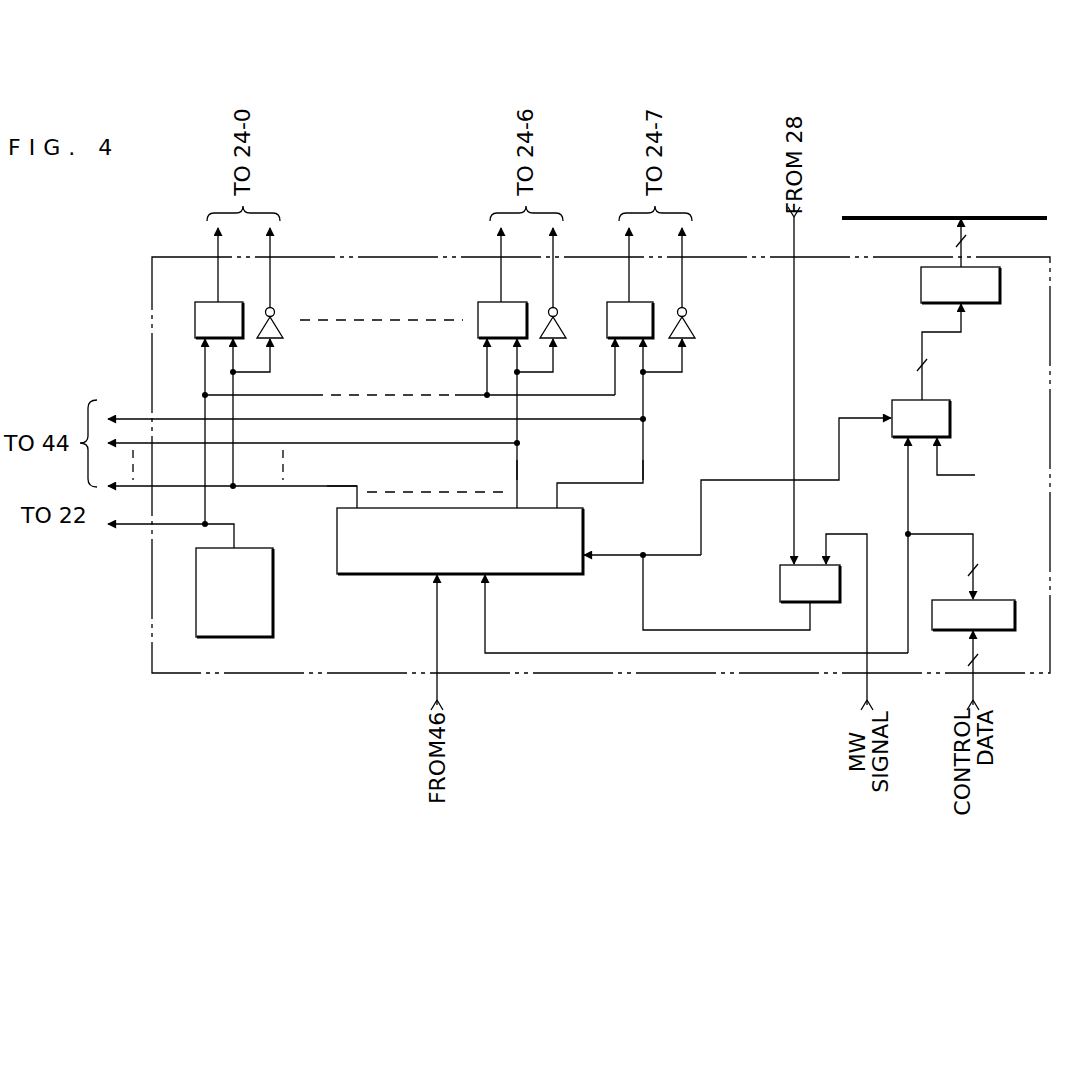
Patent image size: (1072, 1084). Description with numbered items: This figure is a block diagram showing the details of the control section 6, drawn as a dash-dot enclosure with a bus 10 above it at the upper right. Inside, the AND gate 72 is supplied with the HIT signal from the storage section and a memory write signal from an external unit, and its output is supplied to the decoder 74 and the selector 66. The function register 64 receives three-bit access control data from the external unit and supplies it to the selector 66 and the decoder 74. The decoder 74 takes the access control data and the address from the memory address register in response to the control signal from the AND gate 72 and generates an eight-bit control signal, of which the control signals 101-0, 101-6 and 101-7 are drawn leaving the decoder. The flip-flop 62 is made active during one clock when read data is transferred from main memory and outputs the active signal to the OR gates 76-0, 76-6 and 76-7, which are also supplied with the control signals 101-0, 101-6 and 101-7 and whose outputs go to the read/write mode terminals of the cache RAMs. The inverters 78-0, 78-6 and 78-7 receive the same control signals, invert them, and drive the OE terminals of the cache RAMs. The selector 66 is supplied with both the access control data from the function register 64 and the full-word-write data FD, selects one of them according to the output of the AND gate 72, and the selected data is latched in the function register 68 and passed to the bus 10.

The control section 6 is at (600, 675).
The bus 10 is at (999, 216).
The flip-flop 62 is at (267, 627).
The function register 64 is at (999, 624).
The selector 66 is at (954, 404).
The function register 68 is at (989, 299).
The AND gate 72 is at (780, 580).
The decoder 74 is at (349, 562).
The OR gate 76-0 is at (207, 302).
The OR gate 76-6 is at (478, 303).
The OR gate 76-7 is at (607, 330).
The inverter 78-0 is at (280, 321).
The inverter 78-6 is at (561, 319).
The inverter 78-7 is at (689, 340).
The control signal 101-0 is at (327, 484).
The control signal 101-6 is at (520, 471).
The control signal 101-7 is at (646, 471).